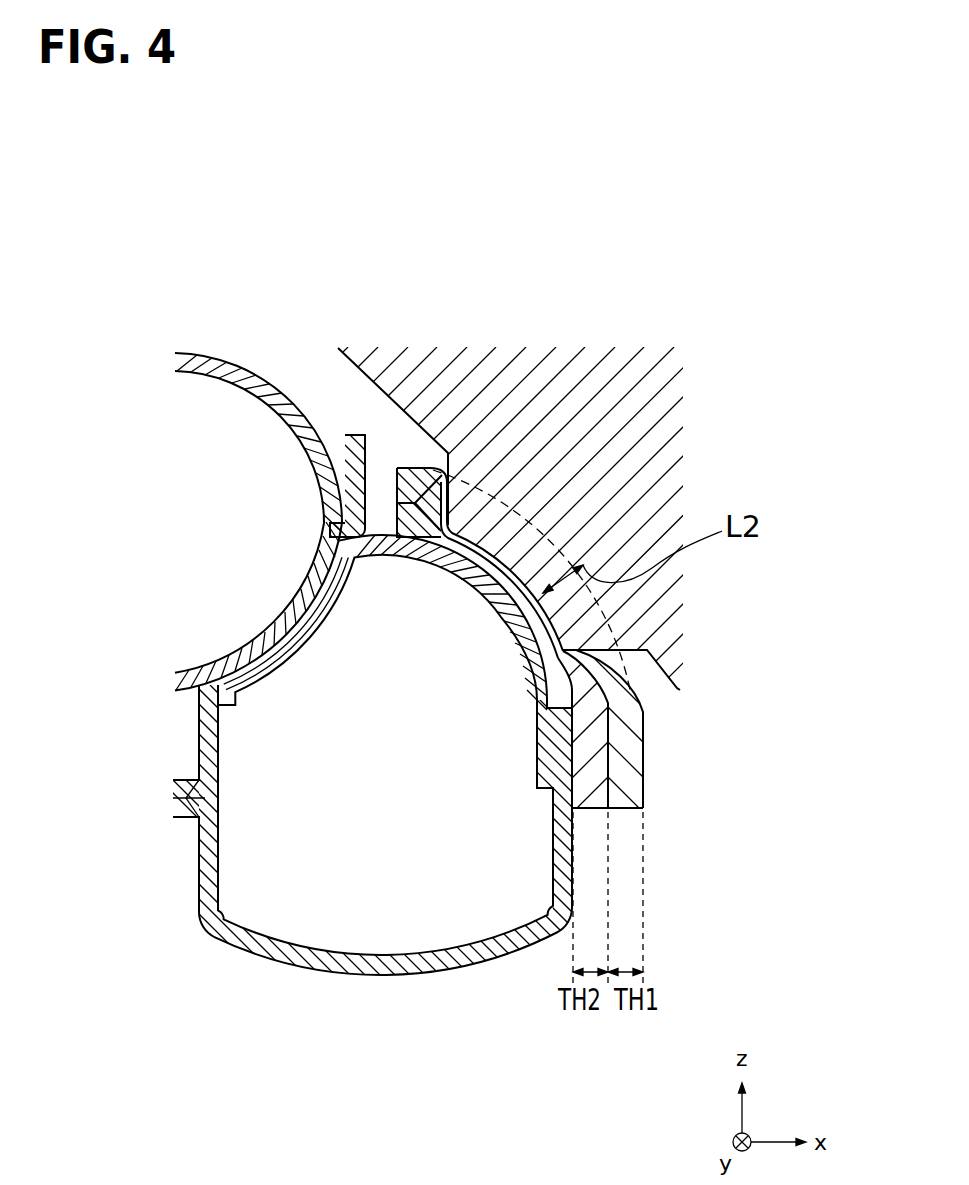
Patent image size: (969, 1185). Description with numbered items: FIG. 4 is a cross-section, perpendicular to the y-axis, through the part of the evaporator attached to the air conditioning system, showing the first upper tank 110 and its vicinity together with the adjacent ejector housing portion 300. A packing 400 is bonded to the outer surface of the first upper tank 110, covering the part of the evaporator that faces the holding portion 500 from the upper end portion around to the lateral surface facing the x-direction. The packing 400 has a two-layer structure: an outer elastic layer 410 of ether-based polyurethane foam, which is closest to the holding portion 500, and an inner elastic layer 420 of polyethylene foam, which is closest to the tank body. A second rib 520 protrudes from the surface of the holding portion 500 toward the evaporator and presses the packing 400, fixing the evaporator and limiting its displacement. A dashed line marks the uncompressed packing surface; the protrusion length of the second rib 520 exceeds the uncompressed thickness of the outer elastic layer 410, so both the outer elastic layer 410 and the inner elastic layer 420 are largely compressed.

The first upper tank 110 is at (372, 970).
The ejector housing portion 300 is at (244, 364).
The packing 400 is at (647, 729).
The outer elastic layer 410 is at (643, 722).
The inner elastic layer 420 is at (598, 780).
The holding portion 500 is at (423, 402).
The second rib 520 is at (506, 522).